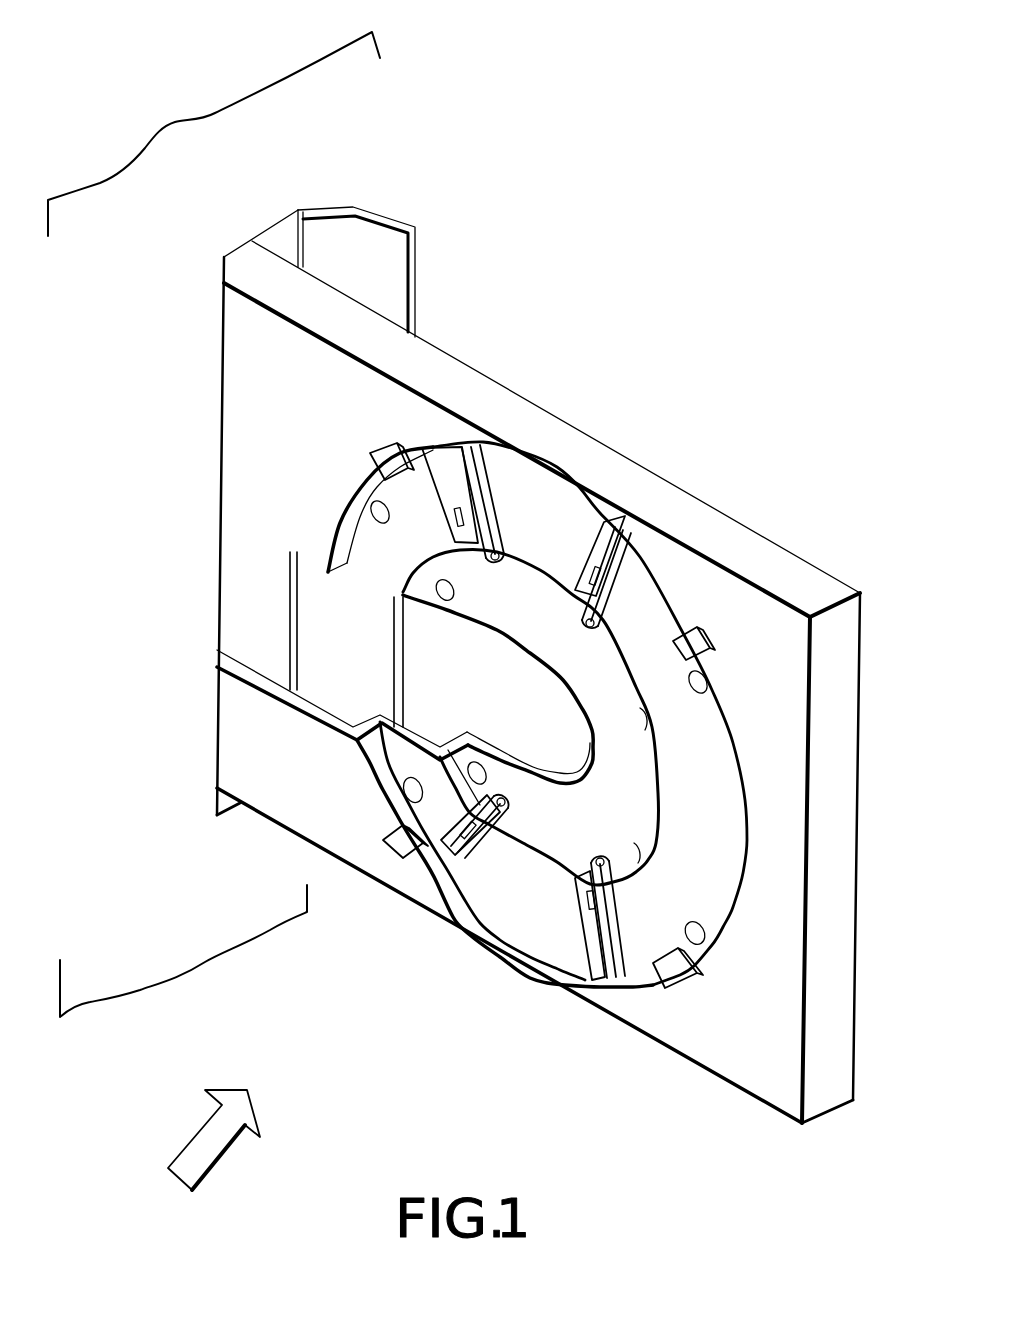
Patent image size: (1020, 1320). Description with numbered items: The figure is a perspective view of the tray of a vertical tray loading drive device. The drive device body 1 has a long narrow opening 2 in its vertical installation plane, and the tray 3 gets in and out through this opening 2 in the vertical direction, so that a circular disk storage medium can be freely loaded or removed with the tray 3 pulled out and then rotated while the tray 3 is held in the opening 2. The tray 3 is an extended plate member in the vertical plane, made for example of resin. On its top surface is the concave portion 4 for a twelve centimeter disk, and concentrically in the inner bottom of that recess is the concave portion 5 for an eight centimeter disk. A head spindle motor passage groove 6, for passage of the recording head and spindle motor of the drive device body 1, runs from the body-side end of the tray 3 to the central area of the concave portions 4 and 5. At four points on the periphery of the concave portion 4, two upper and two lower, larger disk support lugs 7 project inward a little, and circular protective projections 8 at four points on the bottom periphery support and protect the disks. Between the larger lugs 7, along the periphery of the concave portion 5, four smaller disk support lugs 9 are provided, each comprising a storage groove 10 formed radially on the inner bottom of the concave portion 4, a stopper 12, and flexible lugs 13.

The drive device body 1 is at (393, 108).
The opening 2 is at (275, 240).
The tray 3 is at (803, 572).
The concave portion for a 12 cm disk 4 is at (703, 852).
The concave portion for an 8 cm disk 5 is at (640, 757).
The head spindle motor passage groove 6 is at (440, 685).
The larger disk support lugs 7 is at (383, 443).
The circular protective projections 8 is at (378, 513).
The smaller disk support lugs 9 is at (435, 457).
The storage groove 10 is at (500, 540).
The stopper 12 is at (623, 532).
The flexible lugs 13 is at (520, 552).